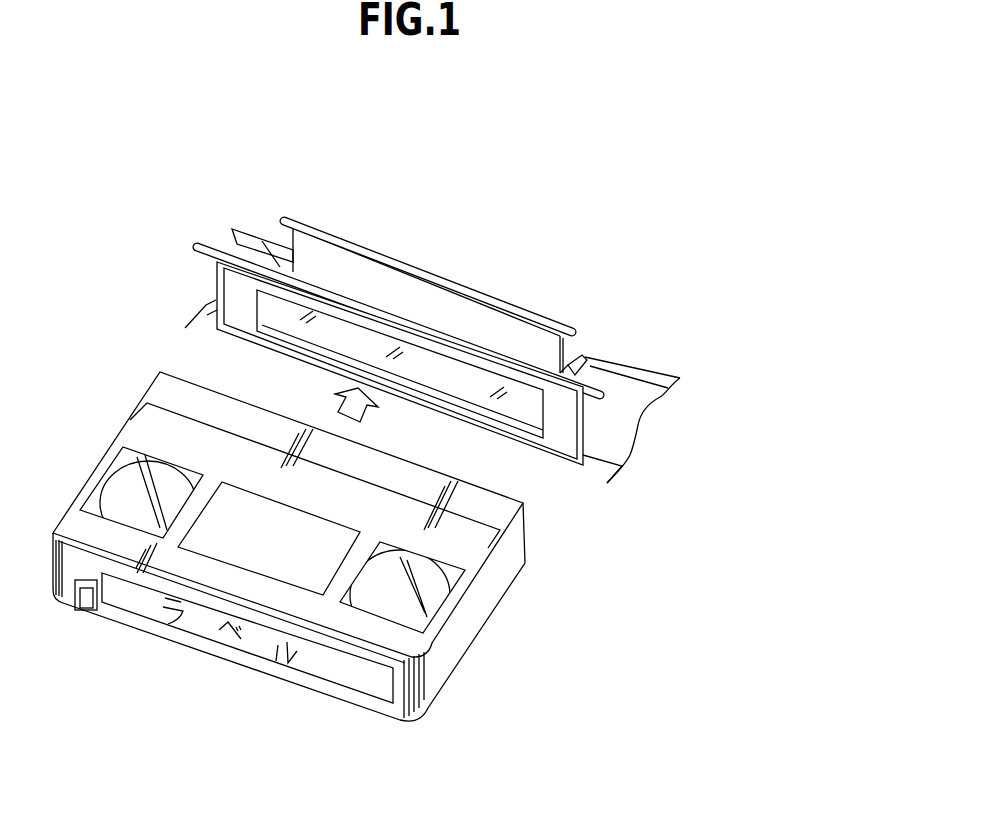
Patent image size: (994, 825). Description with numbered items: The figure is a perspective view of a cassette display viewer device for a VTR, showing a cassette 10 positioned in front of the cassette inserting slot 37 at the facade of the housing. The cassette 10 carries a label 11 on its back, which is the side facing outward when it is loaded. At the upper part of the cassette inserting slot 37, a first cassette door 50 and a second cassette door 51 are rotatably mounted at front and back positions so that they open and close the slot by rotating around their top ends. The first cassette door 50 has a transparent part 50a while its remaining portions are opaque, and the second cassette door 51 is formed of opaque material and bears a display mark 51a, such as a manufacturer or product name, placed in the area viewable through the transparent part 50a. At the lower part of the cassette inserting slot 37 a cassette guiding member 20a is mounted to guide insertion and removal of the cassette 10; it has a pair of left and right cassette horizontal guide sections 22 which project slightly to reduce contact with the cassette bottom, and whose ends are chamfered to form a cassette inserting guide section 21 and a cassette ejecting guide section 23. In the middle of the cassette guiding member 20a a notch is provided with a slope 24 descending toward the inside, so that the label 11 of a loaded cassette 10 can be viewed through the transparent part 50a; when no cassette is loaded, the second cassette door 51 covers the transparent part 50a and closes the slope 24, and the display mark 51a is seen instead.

The cassette 10 is at (478, 648).
The label 11 is at (322, 670).
The cassette guiding member 20a is at (614, 435).
The cassette inserting guide section 21 is at (603, 458).
The cassette horizontal guide section 22 is at (233, 243).
The cassette ejecting guide section 23 is at (270, 232).
The slope 24 is at (522, 410).
The cassette inserting slot 37 is at (485, 434).
The first cassette door 50 is at (237, 275).
The transparent part 50a is at (220, 312).
The second cassette door 51 is at (390, 282).
The display mark 51a is at (450, 310).